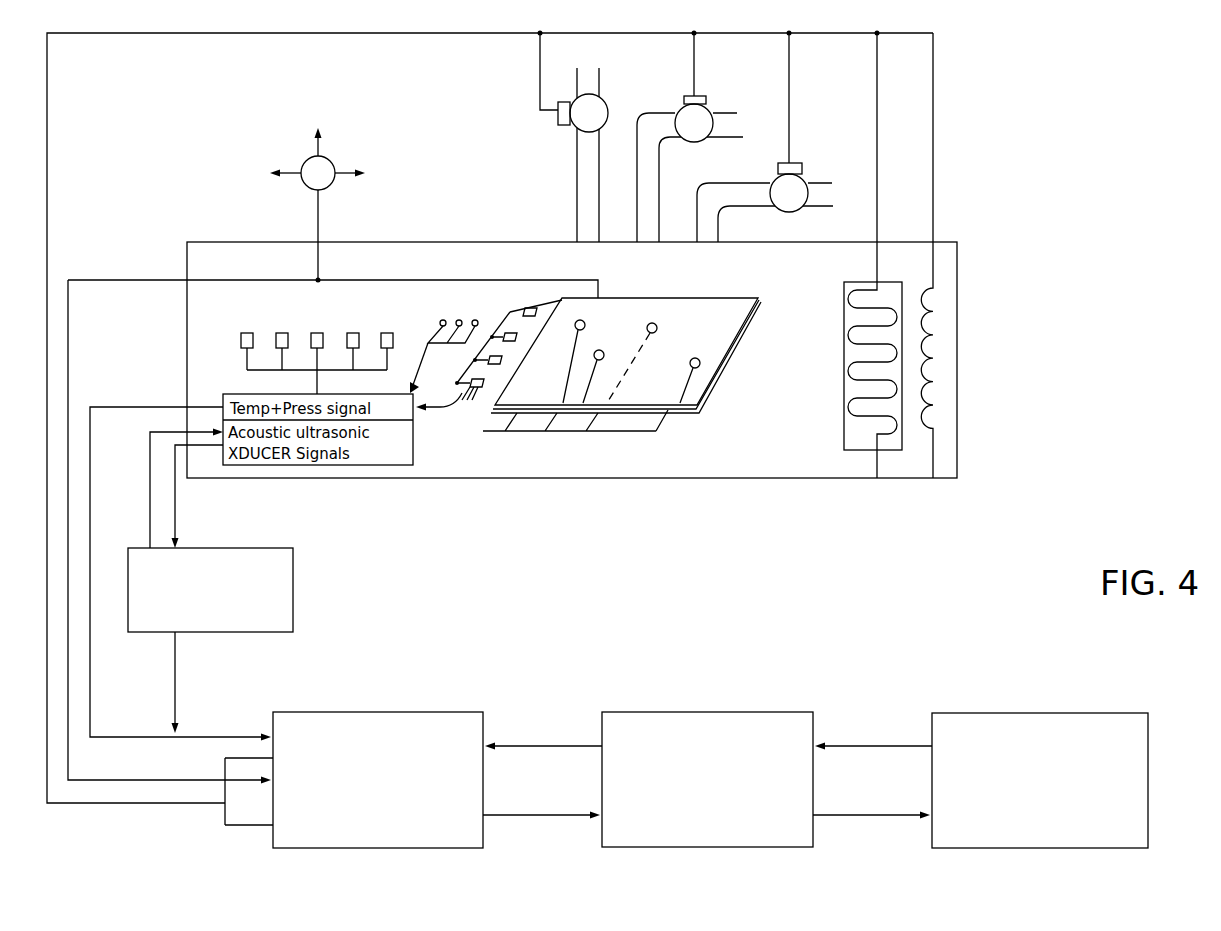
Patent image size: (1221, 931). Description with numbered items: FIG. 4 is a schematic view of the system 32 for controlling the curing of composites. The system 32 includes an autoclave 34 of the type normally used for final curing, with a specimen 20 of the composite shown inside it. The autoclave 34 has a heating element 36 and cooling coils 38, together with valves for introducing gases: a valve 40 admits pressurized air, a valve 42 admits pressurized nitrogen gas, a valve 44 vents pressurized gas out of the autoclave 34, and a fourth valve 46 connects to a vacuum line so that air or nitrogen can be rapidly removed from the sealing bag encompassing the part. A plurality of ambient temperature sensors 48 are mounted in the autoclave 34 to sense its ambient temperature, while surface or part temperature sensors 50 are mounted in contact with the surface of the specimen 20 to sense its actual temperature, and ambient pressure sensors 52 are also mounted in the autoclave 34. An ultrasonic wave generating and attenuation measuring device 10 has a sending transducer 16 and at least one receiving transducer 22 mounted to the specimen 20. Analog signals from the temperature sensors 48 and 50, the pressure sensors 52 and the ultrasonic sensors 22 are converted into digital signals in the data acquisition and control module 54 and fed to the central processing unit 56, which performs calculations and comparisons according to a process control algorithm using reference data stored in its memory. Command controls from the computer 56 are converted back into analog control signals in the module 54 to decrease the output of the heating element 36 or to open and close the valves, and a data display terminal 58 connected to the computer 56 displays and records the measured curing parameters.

The ultrasonic wave generating and attenuation measuring device 10 is at (305, 573).
The ultrasonic wave sending transducer 16 is at (656, 326).
The specimen 20 is at (700, 390).
The receiving transducer 22 is at (690, 363).
The system 32 is at (975, 152).
The autoclave 34 is at (955, 267).
The heating element 36 is at (922, 348).
The cooling coils 38 is at (864, 428).
The valve 40 is at (777, 178).
The valve 42 is at (708, 142).
The valve 44 is at (608, 113).
The fourth valve 46 is at (333, 165).
The ambient temperature sensors 48 is at (387, 333).
The surface or part temperature sensors 50 is at (489, 366).
The ambient pressure sensors 52 is at (443, 320).
The data acquisition and control module 54 is at (483, 780).
The central processing unit 56 is at (813, 722).
The data display terminal 58 is at (1150, 748).